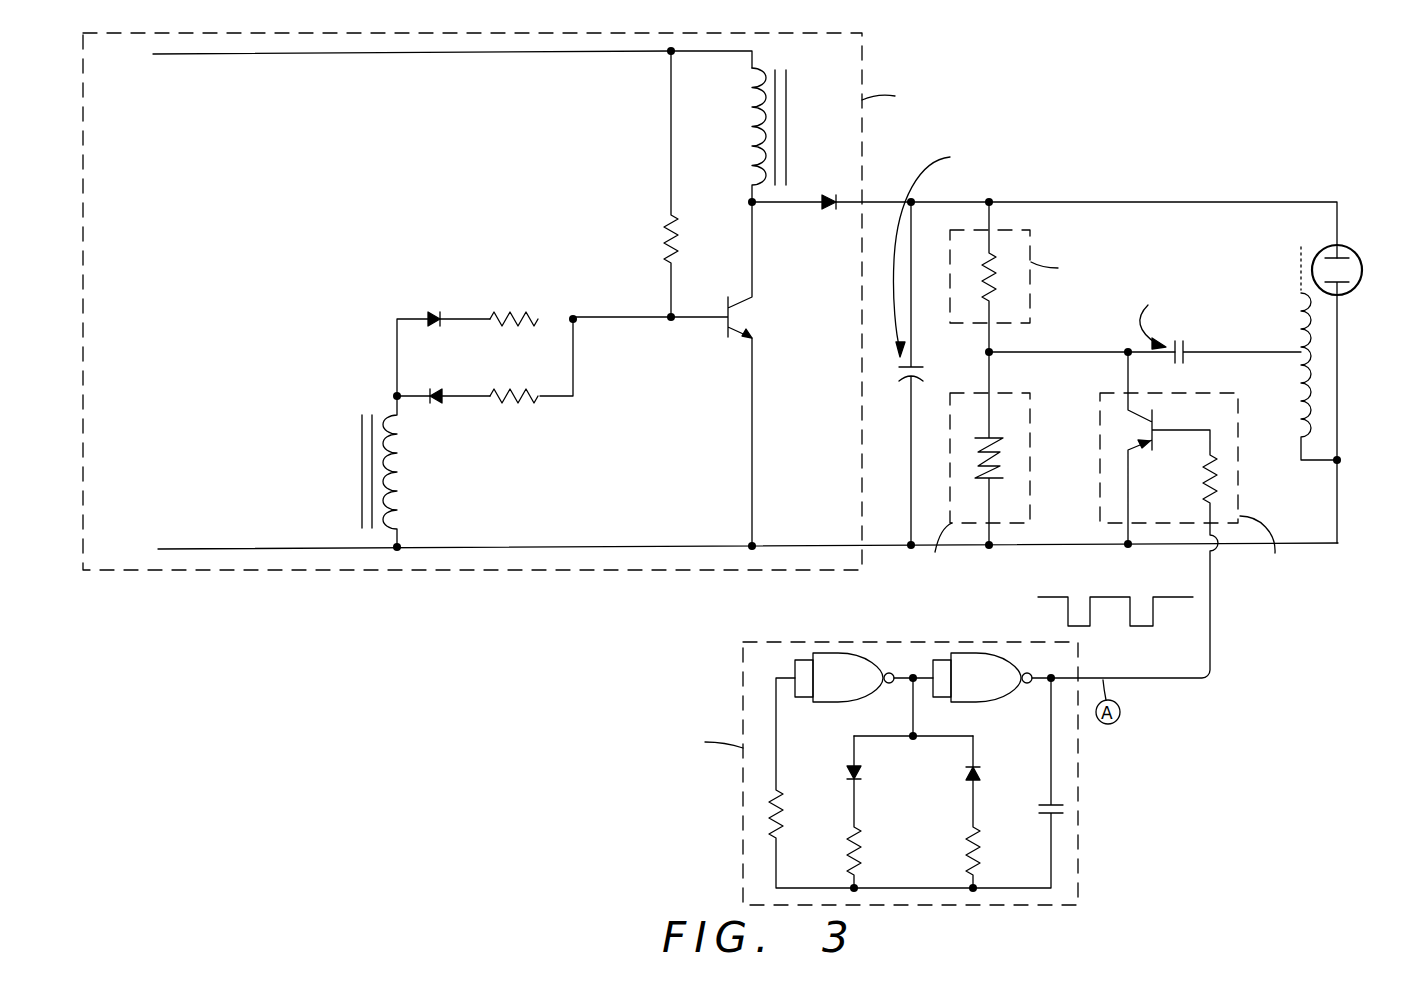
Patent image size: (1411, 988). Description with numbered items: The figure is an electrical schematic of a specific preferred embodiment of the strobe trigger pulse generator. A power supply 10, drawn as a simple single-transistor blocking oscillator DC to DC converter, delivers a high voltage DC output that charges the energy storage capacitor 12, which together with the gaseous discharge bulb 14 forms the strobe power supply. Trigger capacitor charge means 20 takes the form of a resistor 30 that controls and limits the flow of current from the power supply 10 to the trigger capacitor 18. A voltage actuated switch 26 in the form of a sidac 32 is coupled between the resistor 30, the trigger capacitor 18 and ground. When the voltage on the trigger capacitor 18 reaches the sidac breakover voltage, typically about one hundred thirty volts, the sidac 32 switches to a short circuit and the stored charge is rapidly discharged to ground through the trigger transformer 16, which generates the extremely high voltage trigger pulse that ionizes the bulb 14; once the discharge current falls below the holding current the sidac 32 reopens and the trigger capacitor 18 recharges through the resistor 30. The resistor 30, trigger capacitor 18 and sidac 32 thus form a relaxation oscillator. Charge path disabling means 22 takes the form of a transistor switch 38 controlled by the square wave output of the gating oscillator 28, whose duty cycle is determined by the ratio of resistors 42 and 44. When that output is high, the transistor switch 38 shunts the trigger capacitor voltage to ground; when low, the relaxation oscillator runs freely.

The power supply 10 is at (862, 60).
The energy storage capacitor 12 is at (905, 372).
The bulb 14 is at (1362, 268).
The trigger transformer 16 is at (1298, 423).
The trigger capacitor 18 is at (1190, 350).
The trigger capacitor charge means 20 is at (955, 230).
The charge path disabling means 22 is at (1113, 392).
The voltage actuated switch 26 is at (976, 390).
The gating oscillator 28 is at (743, 826).
The resistor 30 is at (982, 273).
The sidac 32 is at (984, 438).
The transistor switch 38 is at (1192, 416).
The resistor 42 is at (862, 846).
The resistor 44 is at (968, 850).